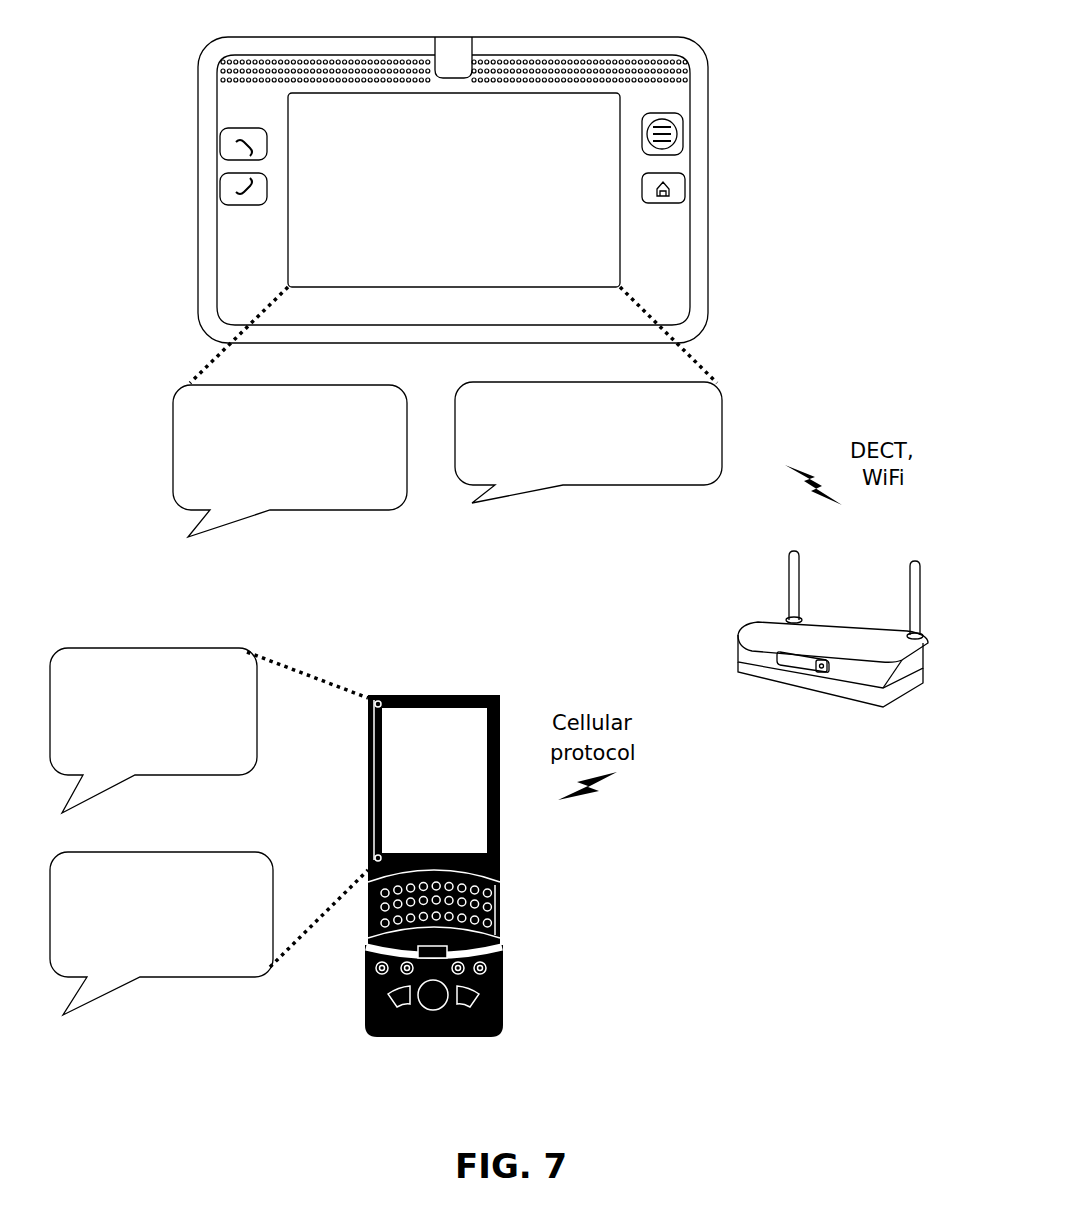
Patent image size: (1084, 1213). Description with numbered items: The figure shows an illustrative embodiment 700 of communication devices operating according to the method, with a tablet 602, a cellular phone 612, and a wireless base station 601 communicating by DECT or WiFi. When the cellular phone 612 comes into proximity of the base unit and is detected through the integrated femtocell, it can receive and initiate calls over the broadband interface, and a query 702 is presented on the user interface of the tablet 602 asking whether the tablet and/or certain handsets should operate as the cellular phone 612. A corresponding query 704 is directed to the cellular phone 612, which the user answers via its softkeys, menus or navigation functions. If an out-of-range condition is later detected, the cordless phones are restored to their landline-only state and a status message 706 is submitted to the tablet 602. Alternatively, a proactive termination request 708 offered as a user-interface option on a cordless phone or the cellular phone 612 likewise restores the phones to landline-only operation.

The wireless router / base station (DECT, WiFi) 601 is at (775, 673).
The tablet 602 is at (703, 227).
The cellular phone 612 is at (503, 957).
The system for cellular/wireline operation 700 is at (531, 1142).
The query 702 is at (327, 512).
The query 704 is at (148, 648).
The status message 706 is at (603, 485).
The termination request 708 is at (193, 977).